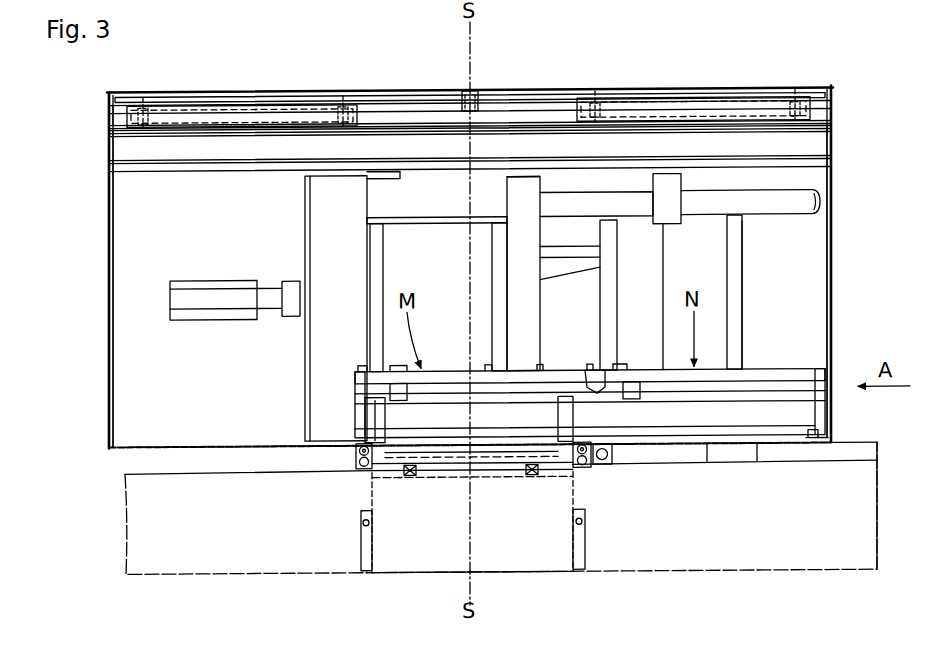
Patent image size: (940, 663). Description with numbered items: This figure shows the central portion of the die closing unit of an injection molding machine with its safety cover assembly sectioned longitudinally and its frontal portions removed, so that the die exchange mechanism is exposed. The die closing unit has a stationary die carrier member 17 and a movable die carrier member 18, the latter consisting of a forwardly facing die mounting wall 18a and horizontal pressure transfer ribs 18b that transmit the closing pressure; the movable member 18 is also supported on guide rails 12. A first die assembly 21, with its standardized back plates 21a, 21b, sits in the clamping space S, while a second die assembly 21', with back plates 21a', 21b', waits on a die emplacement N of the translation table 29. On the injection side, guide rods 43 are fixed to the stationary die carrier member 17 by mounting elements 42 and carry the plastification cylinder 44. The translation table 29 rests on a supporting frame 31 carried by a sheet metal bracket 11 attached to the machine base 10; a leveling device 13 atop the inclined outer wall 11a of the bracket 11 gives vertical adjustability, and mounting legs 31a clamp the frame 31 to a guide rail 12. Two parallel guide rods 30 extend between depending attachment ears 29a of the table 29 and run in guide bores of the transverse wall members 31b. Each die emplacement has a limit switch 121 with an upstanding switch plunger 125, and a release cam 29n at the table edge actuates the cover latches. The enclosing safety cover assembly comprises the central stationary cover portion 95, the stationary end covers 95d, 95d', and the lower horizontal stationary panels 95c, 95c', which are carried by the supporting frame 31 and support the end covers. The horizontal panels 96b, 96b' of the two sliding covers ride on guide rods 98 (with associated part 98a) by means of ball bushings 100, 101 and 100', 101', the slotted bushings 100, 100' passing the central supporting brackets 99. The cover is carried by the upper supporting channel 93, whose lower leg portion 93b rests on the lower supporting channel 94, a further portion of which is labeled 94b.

The machine base 10 is at (862, 507).
The sheet metal bracket 11 is at (578, 500).
The inclined outer wall 11a is at (512, 540).
The guide rails 12 is at (757, 466).
The leveling device 13 is at (538, 478).
The stationary die carrier member 17 is at (326, 205).
The movable die carrier member 18 is at (504, 283).
The die mounting wall 18a is at (516, 186).
The pressure transfer ribs 18b is at (582, 254).
The die assembly 21 is at (411, 262).
The back plate 21a is at (348, 298).
The back plate 21b is at (467, 297).
The second die assembly 21' is at (770, 292).
The back plate 21a' is at (666, 296).
The back plate 21b' is at (777, 295).
The translation table 29 is at (828, 406).
The attachment ears 29a is at (830, 428).
The release cam 29n is at (598, 380).
The guide rods 30 is at (707, 465).
The supporting frame 31 is at (438, 472).
The mounting legs 31a is at (357, 460).
The transverse wall members 31b is at (383, 458).
The mounting elements 42 is at (294, 296).
The guide rods 43 is at (233, 318).
The plastification cylinder 44 is at (216, 279).
The upper supporting channel 93 is at (418, 137).
The lower leg portion 93b is at (408, 126).
The lower supporting channel 94 is at (812, 172).
The shaft bearing strip 94b is at (812, 144).
The central stationary cover portion 95 is at (500, 86).
The lower horizontal stationary panel 95c is at (501, 474).
The lower horizontal stationary panel 95c' is at (725, 471).
The stationary end cover 95d is at (143, 288).
The stationary end cover 95d' is at (867, 281).
The horizontal panel 96b is at (242, 84).
The horizontal panel 96b' is at (693, 77).
The guide rods 98 is at (543, 108).
The cover plate edge 98a is at (117, 115).
The central supporting brackets 99 is at (462, 95).
The ball bushings 100 is at (344, 88).
The ball bushings 100' is at (629, 129).
The ball bushings 101 is at (140, 88).
The ball bushings 101' is at (801, 76).
The limit switch 121 is at (400, 396).
The switch plunger 125 is at (396, 366).